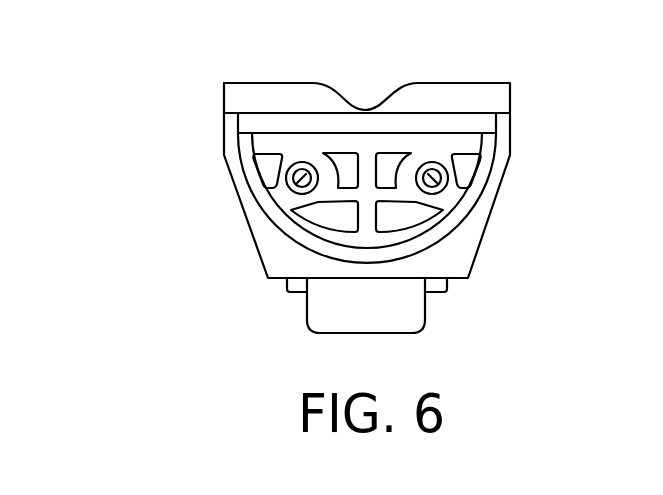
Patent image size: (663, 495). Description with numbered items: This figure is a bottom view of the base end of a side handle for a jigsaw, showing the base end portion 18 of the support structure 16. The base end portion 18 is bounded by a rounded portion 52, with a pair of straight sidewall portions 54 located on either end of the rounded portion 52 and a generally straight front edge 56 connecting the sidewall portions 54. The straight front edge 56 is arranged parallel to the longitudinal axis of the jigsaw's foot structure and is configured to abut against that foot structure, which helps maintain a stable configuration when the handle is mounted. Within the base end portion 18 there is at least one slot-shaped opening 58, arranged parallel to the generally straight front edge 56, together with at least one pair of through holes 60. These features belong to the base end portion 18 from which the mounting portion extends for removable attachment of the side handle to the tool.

The support structure 16 is at (158, 112).
The base end portion 18 is at (526, 120).
The rounded portion 52 is at (446, 233).
The straight sidewall portions 54 is at (224, 151).
The straight front edge 56 is at (258, 100).
The slot-shaped opening 58 is at (367, 122).
The through holes 60 is at (296, 184).